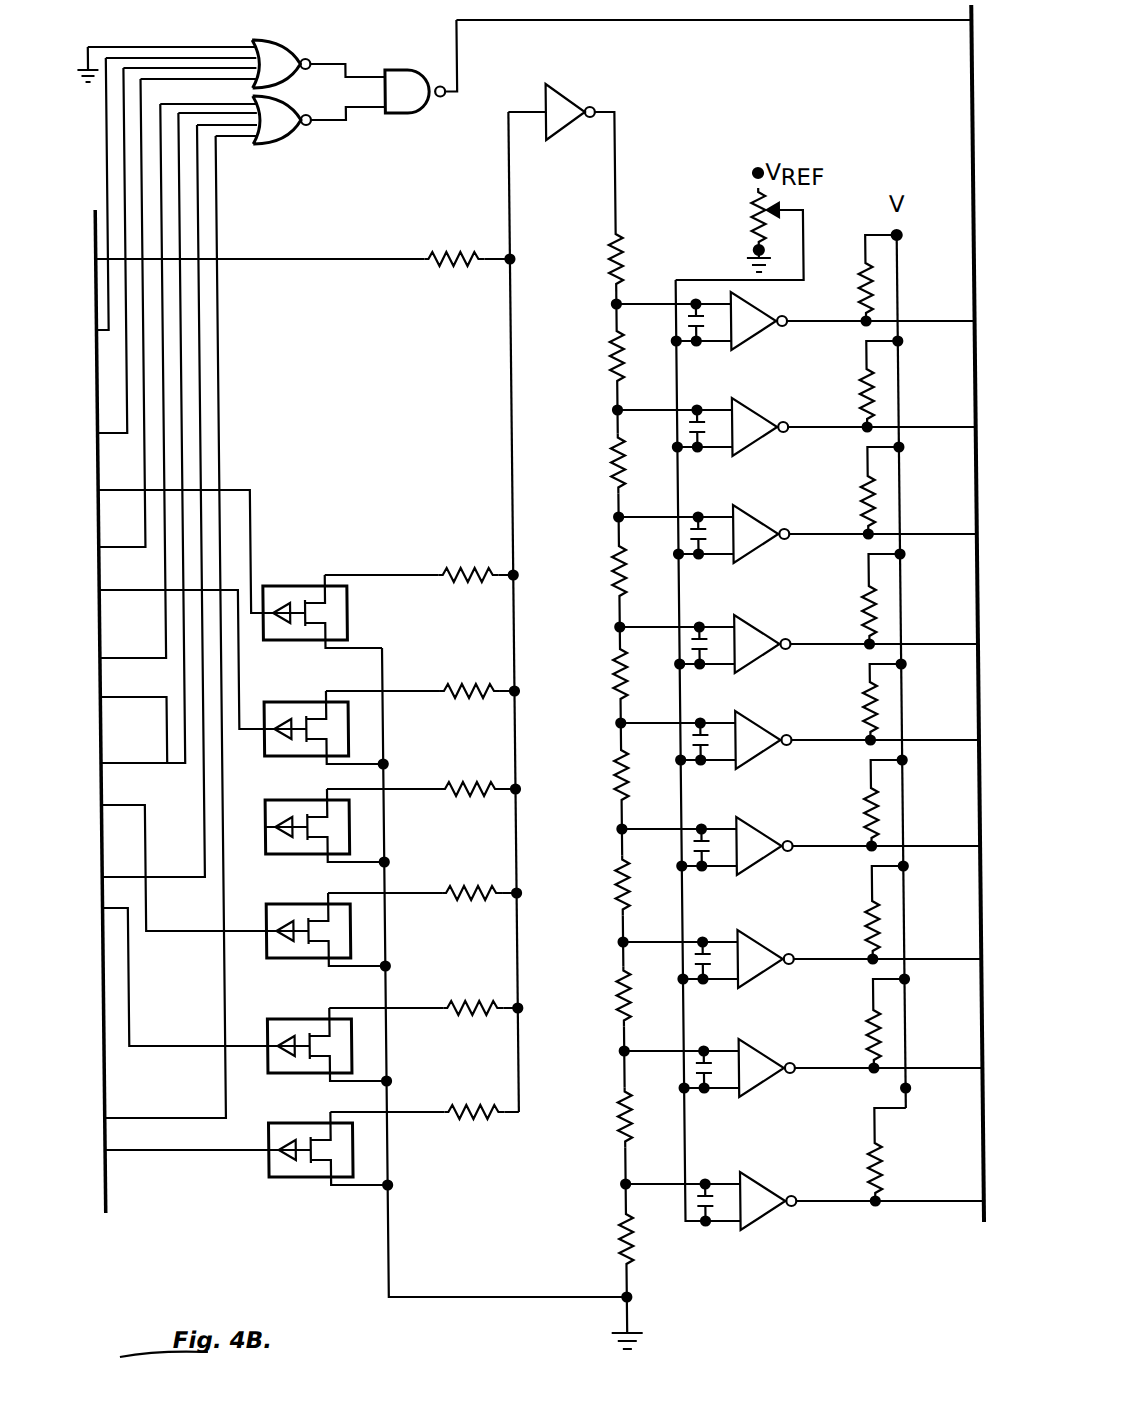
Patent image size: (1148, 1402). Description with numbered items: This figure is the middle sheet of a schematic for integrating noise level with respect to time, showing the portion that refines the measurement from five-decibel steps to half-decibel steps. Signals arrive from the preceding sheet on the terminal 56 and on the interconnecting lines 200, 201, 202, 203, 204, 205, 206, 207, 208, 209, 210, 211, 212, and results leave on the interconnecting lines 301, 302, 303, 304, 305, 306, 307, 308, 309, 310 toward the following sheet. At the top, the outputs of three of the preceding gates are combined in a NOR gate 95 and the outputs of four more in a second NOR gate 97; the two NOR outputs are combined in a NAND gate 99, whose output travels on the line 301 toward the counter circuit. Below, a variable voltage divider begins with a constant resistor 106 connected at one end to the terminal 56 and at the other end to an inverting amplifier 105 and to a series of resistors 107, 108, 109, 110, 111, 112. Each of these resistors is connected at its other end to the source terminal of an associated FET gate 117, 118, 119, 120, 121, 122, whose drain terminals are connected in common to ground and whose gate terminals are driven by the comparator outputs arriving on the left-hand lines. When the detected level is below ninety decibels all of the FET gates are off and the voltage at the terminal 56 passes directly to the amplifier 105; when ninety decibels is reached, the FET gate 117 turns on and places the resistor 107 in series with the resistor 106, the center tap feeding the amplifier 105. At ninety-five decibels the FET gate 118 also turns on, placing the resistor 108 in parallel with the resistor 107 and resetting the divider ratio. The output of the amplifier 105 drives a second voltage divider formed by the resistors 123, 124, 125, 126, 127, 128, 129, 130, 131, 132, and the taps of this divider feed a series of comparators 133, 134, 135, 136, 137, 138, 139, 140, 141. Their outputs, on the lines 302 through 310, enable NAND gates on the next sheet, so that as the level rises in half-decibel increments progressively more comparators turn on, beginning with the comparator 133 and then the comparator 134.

The terminal 56 is at (104, 255).
The NOR gate 95 is at (298, 50).
The second NOR gate 97 is at (295, 145).
The NAND gate 99 is at (426, 73).
The inverting amplifier 105 is at (571, 103).
The constant resistor 106 is at (459, 250).
The resistor 107 is at (487, 564).
The resistor 108 is at (486, 680).
The resistor 109 is at (485, 778).
The resistor 110 is at (484, 882).
The resistor 111 is at (483, 997).
The resistor 112 is at (482, 1101).
The FET gate 117 is at (298, 580).
The FET gate 118 is at (300, 693).
The FET gate 119 is at (304, 798).
The FET gate 120 is at (305, 905).
The FET gate 121 is at (305, 1018).
The FET gate 122 is at (303, 1122).
The resistor 123 is at (631, 244).
The resistor 124 is at (611, 357).
The resistor 125 is at (610, 463).
The resistor 126 is at (609, 572).
The resistor 127 is at (608, 675).
The resistor 128 is at (607, 776).
The resistor 129 is at (606, 885).
The resistor 130 is at (605, 996).
The resistor 131 is at (612, 1117).
The resistor 132 is at (611, 1240).
The comparator 133 is at (751, 340).
The comparator 134 is at (750, 446).
The comparator 135 is at (749, 553).
The comparator 136 is at (748, 663).
The comparator 137 is at (747, 759).
The comparator 138 is at (746, 865).
The comparator 139 is at (745, 978).
The comparator 140 is at (744, 1087).
The comparator 141 is at (743, 1220).
The interconnecting line 200 is at (117, 308).
The interconnecting line 201 is at (132, 407).
The interconnecting line 202 is at (256, 500).
The interconnecting line 203 is at (117, 546).
The interconnecting line 204 is at (142, 592).
The interconnecting line 205 is at (157, 655).
The interconnecting line 206 is at (118, 700).
The interconnecting line 207 is at (110, 765).
The interconnecting line 208 is at (125, 812).
The interconnecting line 209 is at (174, 880).
The interconnecting line 210 is at (126, 975).
The interconnecting line 211 is at (130, 1118).
The interconnecting line 212 is at (159, 1150).
The interconnecting line 301 is at (822, 22).
The interconnecting line 302 is at (928, 318).
The interconnecting line 303 is at (927, 424).
The interconnecting line 304 is at (926, 531).
The interconnecting line 305 is at (925, 641).
The interconnecting line 306 is at (924, 737).
The interconnecting line 307 is at (923, 843).
The interconnecting line 308 is at (922, 956).
The interconnecting line 309 is at (921, 1065).
The interconnecting line 310 is at (920, 1198).